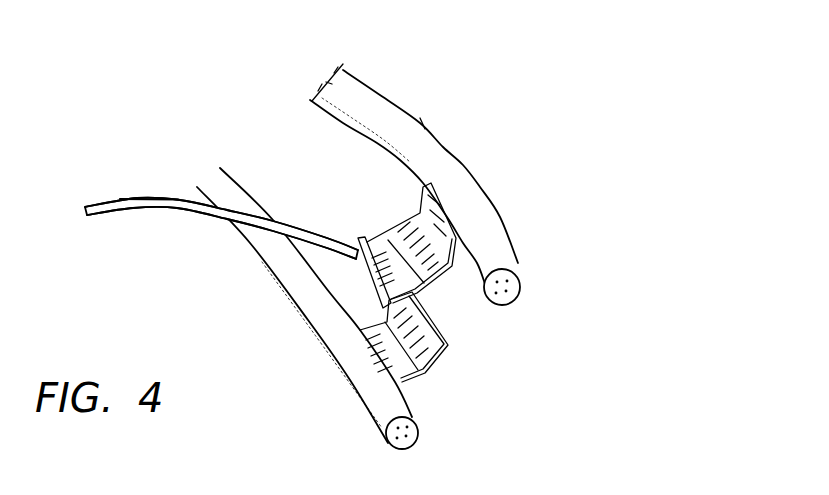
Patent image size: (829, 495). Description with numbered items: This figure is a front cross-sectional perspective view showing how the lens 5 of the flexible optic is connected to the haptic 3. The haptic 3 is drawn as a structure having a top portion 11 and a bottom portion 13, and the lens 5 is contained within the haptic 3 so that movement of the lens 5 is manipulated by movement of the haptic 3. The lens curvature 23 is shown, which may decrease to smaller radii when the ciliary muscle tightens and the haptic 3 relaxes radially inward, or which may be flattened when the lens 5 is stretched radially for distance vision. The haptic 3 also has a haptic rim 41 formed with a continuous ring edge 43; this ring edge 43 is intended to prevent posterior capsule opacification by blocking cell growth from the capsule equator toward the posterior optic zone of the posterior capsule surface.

The haptic 3 is at (482, 212).
The lens 5 is at (118, 200).
The top portion 11 is at (422, 127).
The bottom portion 13 is at (343, 347).
The lens curvature 23 is at (175, 211).
The haptic rim 41 is at (518, 267).
The continuous ring edge 43 is at (370, 103).